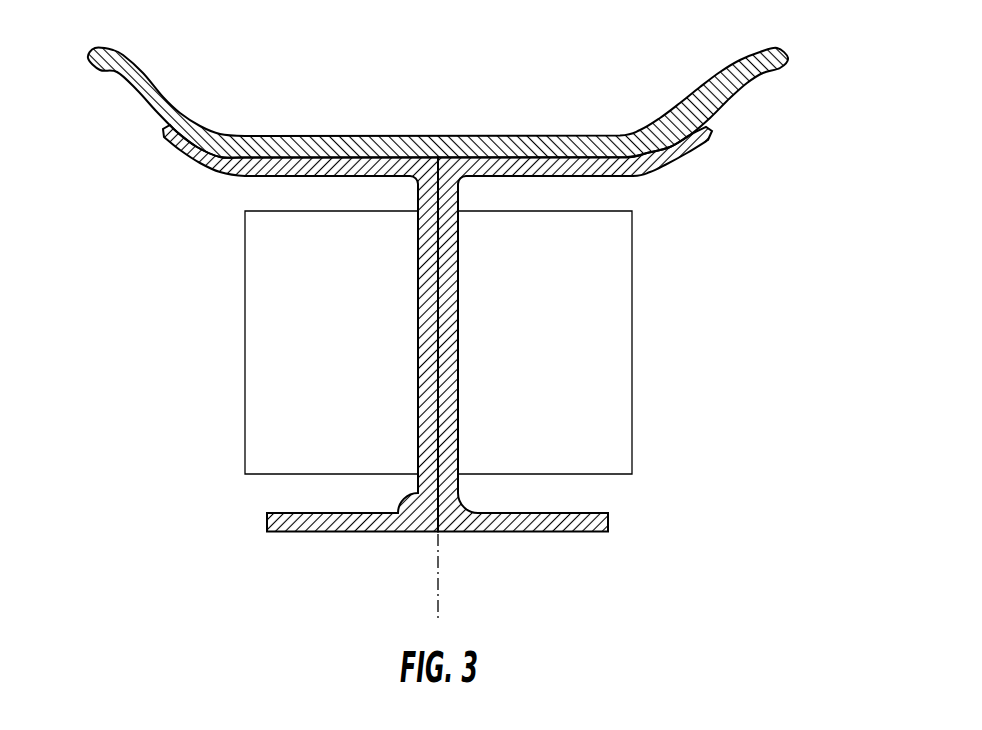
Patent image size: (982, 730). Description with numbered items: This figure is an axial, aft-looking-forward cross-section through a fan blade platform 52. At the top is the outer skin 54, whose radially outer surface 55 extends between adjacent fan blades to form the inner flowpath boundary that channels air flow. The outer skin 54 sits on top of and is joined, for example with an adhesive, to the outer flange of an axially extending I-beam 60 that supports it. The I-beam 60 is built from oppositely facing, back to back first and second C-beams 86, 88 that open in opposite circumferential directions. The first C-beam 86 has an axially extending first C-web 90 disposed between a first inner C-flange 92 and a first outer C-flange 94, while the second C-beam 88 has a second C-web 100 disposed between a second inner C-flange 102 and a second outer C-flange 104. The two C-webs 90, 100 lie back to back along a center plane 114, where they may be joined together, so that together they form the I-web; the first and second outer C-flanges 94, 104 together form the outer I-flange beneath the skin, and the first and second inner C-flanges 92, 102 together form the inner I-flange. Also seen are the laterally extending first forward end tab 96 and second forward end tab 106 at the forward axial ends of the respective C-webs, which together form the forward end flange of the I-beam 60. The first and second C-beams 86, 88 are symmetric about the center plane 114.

The platform 52 is at (394, 66).
The outer skin 54 is at (762, 56).
The radially outer surface 55 is at (616, 135).
The I-beam 60 is at (462, 346).
The first C-beam 86 is at (226, 184).
The second C-beam 88 is at (692, 164).
The first C-web 90 is at (416, 320).
The first inner C-flange 92 is at (318, 532).
The first outer C-flange 94 is at (323, 173).
The first forward end tab 96 is at (345, 394).
The second C-web 100 is at (458, 352).
The second inner C-flange 102 is at (542, 532).
The second outer C-flange 104 is at (708, 130).
The second forward end tab 106 is at (564, 394).
The center plane 114 is at (438, 600).